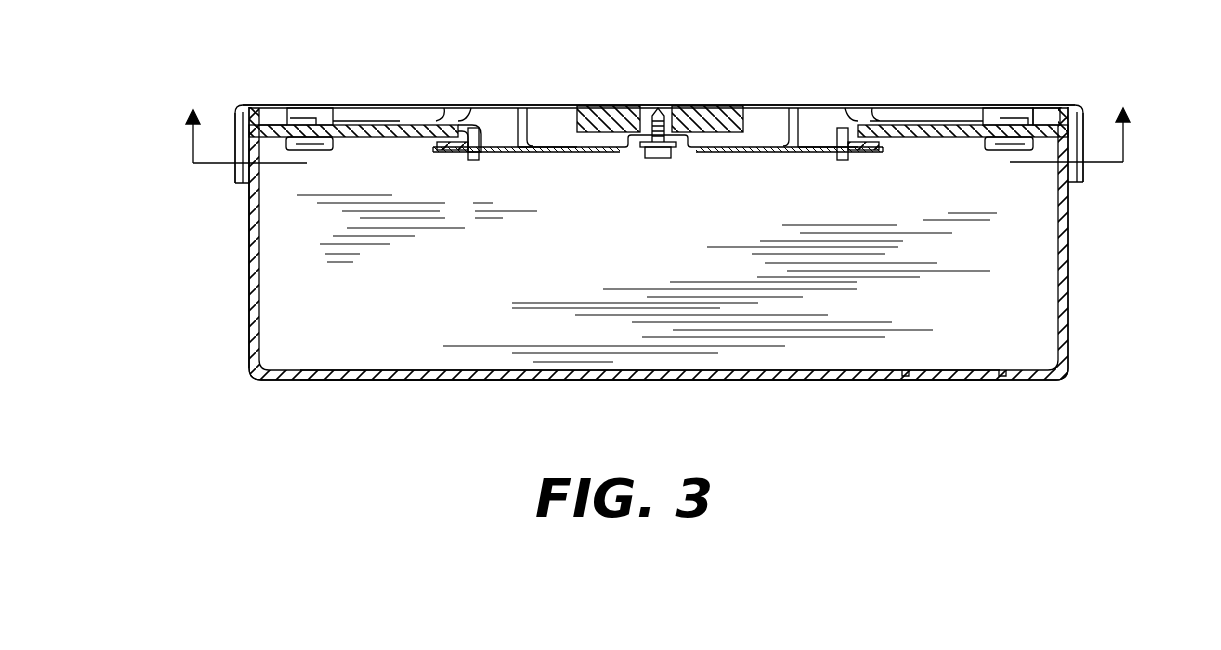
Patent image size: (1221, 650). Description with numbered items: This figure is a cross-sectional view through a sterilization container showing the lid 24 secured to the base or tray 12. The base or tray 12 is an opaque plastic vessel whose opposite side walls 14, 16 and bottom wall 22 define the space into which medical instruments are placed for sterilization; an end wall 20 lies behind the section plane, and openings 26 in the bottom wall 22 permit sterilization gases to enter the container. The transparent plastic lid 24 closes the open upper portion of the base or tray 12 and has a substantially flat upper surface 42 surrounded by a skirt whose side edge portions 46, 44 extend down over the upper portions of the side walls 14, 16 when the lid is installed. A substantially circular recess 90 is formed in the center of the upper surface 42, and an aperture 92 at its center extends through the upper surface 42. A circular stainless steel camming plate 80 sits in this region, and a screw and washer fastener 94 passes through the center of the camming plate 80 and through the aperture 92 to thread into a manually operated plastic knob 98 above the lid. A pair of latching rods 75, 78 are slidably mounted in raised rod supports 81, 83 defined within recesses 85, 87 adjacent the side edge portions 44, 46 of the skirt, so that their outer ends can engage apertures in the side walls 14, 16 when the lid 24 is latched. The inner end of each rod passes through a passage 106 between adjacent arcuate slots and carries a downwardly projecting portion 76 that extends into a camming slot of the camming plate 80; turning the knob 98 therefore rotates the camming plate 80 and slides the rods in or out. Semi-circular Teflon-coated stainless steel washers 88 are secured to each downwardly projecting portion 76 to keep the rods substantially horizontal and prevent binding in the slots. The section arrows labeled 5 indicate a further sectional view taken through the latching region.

The section line 5- 5 is at (659, 135).
The base or tray 12 is at (1130, 246).
The side wall 14 is at (1068, 327).
The side wall 16 is at (249, 263).
The end wall 20 is at (758, 362).
The bottom wall 22 is at (840, 381).
The lid 24 is at (1090, 90).
The openings 26 is at (905, 371).
The upper surface 42 is at (264, 105).
The side edge portion 44 is at (237, 184).
The side edge portion 46 is at (1087, 178).
The latching rod 75 is at (403, 130).
The downwardly projecting portion 76 is at (483, 146).
The latching rod 78 is at (906, 121).
The camming plate 80 is at (753, 158).
The rod support 81 is at (308, 118).
The rod support 83 is at (1005, 110).
The recess 85 is at (997, 110).
The recess 87 is at (320, 112).
The washers 88 is at (440, 153).
The circular recess 90 is at (560, 143).
The aperture 92 is at (637, 133).
The screw and washer fastener 94 is at (653, 160).
The knob 98 is at (707, 112).
The passage 106 is at (452, 115).